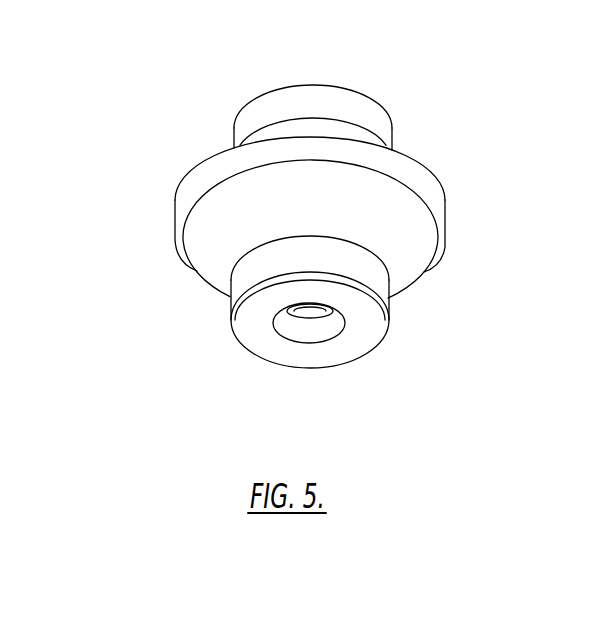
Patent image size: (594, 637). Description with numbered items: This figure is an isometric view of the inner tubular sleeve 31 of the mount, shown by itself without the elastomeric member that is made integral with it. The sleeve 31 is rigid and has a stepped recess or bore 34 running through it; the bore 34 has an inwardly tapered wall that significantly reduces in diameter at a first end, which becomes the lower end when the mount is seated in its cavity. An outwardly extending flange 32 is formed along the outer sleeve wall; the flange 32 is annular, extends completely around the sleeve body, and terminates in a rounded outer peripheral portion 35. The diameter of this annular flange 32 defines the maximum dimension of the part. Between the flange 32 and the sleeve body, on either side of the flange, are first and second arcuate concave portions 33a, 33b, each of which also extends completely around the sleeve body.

The inner tubular sleeve 31 is at (213, 368).
The flange 32 is at (442, 193).
The first arcuate concave portion 33a is at (258, 137).
The second arcuate concave portion 33b is at (403, 273).
The bore 34 is at (335, 331).
The rounded outer peripheral portion 35 is at (187, 207).